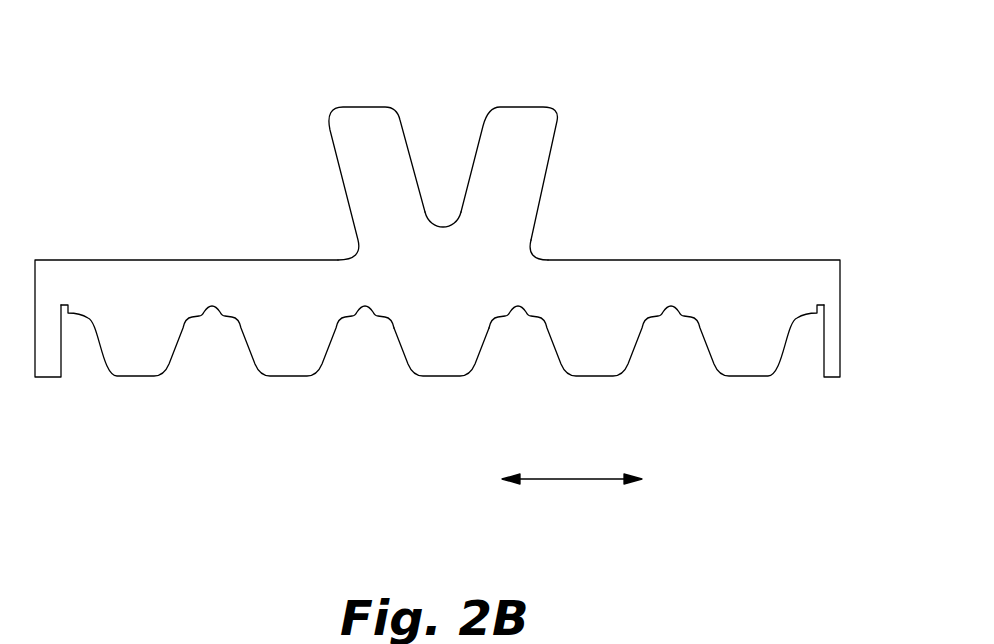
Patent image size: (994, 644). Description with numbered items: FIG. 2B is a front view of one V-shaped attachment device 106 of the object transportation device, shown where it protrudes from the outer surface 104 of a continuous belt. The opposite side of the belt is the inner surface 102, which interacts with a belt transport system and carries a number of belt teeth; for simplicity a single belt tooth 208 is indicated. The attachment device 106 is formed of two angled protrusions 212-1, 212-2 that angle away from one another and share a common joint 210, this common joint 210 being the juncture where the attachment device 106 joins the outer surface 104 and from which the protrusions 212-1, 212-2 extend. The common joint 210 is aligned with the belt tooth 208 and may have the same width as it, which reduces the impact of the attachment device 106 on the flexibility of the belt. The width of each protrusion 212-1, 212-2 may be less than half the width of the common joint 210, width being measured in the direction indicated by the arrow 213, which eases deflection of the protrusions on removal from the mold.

The inner surface 102 is at (442, 393).
The outer surface 104 is at (176, 269).
The attachment device 106 is at (440, 137).
The belt tooth 208 is at (443, 348).
The common joint 210 is at (530, 252).
The angled protrusion 212-1 is at (329, 117).
The angled protrusion 212-2 is at (518, 107).
The arrow 213 is at (598, 482).